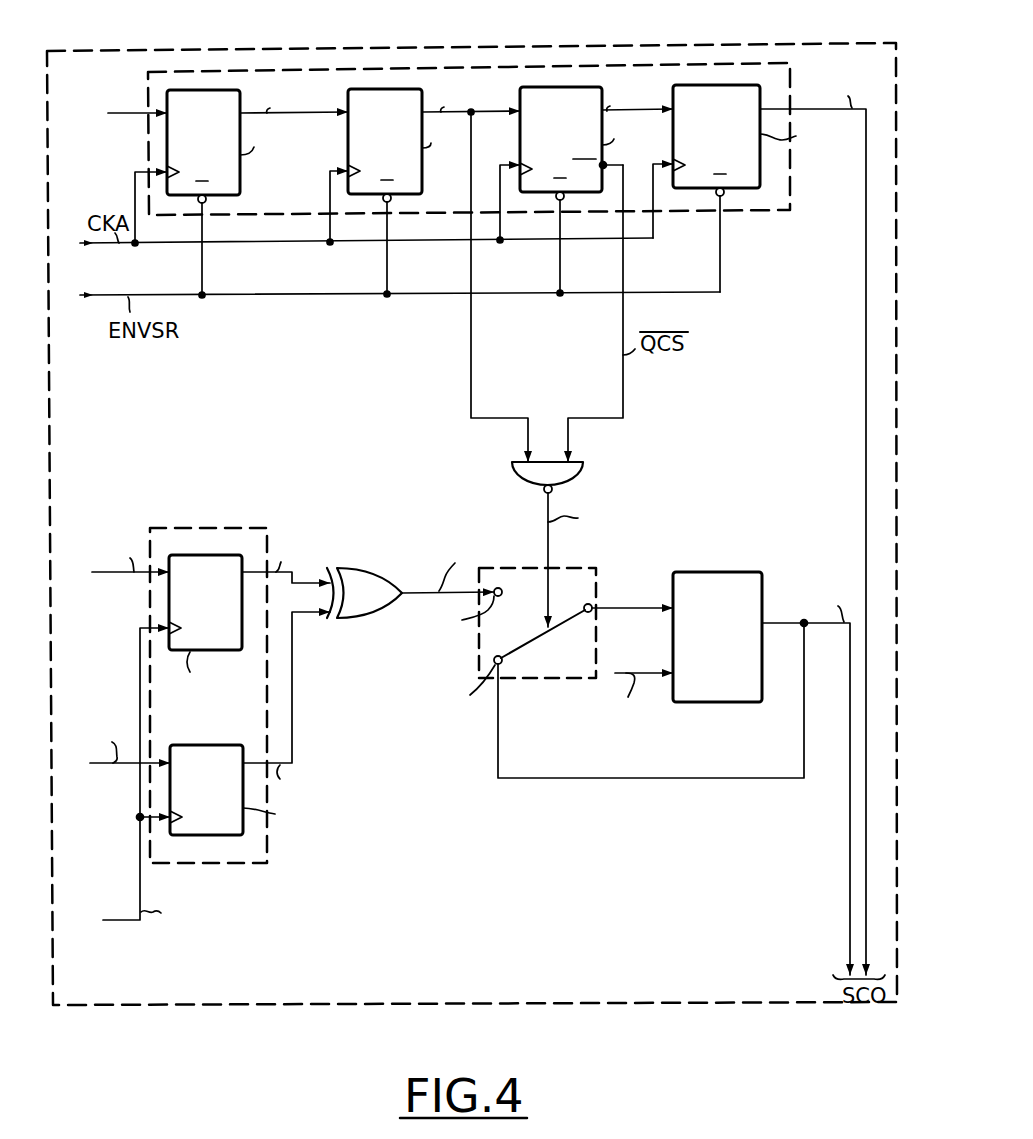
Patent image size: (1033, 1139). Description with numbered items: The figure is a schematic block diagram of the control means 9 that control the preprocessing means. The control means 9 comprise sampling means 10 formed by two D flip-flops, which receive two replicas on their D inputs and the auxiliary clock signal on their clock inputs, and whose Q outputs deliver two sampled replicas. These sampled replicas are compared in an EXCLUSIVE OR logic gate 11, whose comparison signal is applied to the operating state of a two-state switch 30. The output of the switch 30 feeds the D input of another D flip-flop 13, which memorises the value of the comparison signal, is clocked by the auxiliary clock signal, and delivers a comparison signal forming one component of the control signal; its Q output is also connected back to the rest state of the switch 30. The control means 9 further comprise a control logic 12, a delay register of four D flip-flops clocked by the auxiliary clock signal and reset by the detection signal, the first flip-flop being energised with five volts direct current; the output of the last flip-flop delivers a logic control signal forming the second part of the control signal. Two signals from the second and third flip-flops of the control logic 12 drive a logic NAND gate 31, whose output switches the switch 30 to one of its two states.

The control means 9 is at (763, 43).
The control logic 12 is at (791, 158).
The sampling means 10 is at (228, 528).
The EXCLUSIVE OR logic gate 11 is at (358, 568).
The logic NAND gate 31 is at (583, 463).
The switch 30 is at (585, 568).
The D flip-flop 13 is at (724, 572).